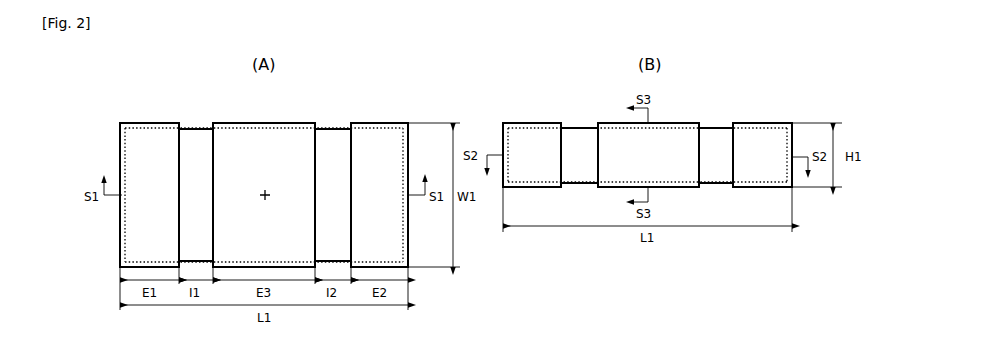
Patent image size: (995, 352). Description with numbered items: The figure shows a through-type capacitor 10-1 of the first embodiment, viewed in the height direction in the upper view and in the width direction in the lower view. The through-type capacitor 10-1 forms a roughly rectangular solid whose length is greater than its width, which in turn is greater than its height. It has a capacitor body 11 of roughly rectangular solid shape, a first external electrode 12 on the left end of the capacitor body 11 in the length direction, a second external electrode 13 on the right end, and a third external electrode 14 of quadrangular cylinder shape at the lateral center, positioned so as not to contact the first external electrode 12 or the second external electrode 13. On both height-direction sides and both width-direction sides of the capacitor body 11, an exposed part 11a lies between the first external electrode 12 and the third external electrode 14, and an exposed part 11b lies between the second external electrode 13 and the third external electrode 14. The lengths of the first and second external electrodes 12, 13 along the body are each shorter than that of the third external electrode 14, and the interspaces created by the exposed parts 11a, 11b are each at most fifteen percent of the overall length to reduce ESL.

The through-type capacitor 10-1 is at (118, 120).
The capacitor body 11 is at (187, 129).
The exposed part 11a is at (202, 136).
The exposed part 11b is at (335, 136).
The first external electrode 12 is at (133, 123).
The second external electrode 13 is at (380, 123).
The third external electrode 14 is at (257, 123).